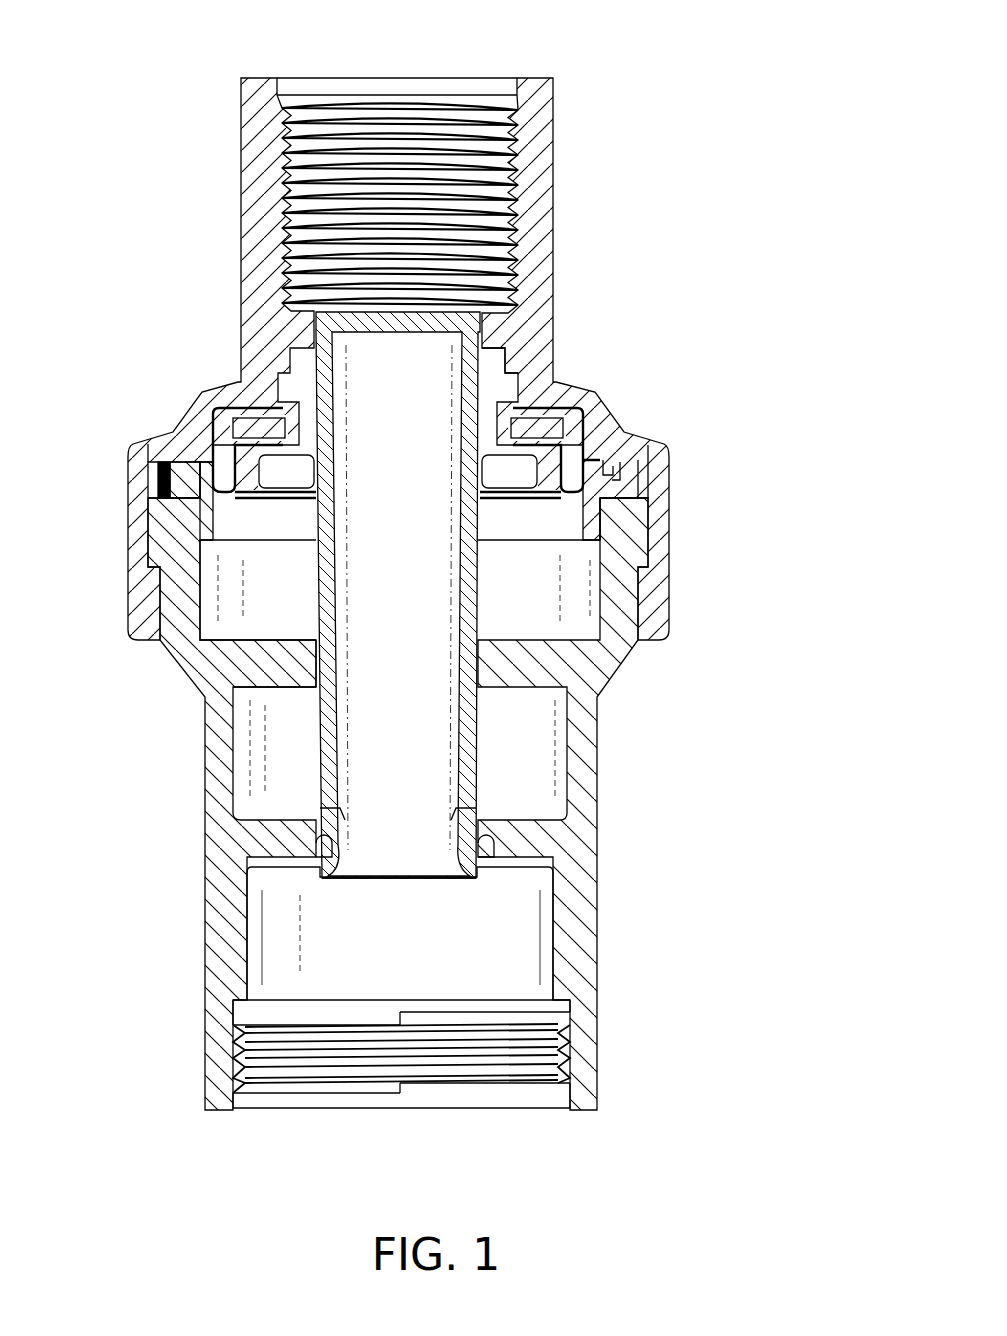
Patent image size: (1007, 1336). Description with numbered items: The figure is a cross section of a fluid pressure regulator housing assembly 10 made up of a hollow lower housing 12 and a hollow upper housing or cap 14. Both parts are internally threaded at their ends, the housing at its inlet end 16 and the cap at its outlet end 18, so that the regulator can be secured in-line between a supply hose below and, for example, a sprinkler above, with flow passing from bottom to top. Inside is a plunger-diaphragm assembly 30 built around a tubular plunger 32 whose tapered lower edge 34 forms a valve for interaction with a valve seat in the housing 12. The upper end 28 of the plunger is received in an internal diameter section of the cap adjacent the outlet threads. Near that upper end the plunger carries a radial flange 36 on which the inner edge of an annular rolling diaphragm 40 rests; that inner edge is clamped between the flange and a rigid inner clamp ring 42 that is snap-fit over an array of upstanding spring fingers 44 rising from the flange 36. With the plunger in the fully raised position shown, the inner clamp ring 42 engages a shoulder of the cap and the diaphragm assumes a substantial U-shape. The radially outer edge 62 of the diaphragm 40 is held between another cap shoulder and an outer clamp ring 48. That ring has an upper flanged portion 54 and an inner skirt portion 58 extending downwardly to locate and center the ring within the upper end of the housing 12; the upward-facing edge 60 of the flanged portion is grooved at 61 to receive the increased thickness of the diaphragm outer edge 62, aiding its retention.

The fluid pressure regulator housing assembly 10 is at (700, 111).
The lower housing 12 is at (598, 824).
The upper housing or cap 14 is at (242, 232).
The inlet end 16 is at (597, 1072).
The outlet end 18 is at (538, 103).
The upper end of plunger-diaphragm assembly 28 is at (478, 343).
The plunger-diaphragm assembly 30 is at (317, 657).
The tubular plunger 32 is at (324, 587).
The tapered lower edge 34 is at (327, 870).
The radial flange 36 is at (510, 450).
The rolling diaphragm 40 is at (229, 500).
The inner clamp ring 42 is at (518, 455).
The spring fingers 44 is at (303, 428).
The outer clamp ring 48 is at (193, 521).
The upper flanged portion 54 is at (195, 472).
The inner skirt portion 58 is at (232, 510).
The upward-facing edge 60 is at (623, 443).
The groove 61 is at (628, 481).
The radially outer edge of diaphragm 62 is at (198, 462).